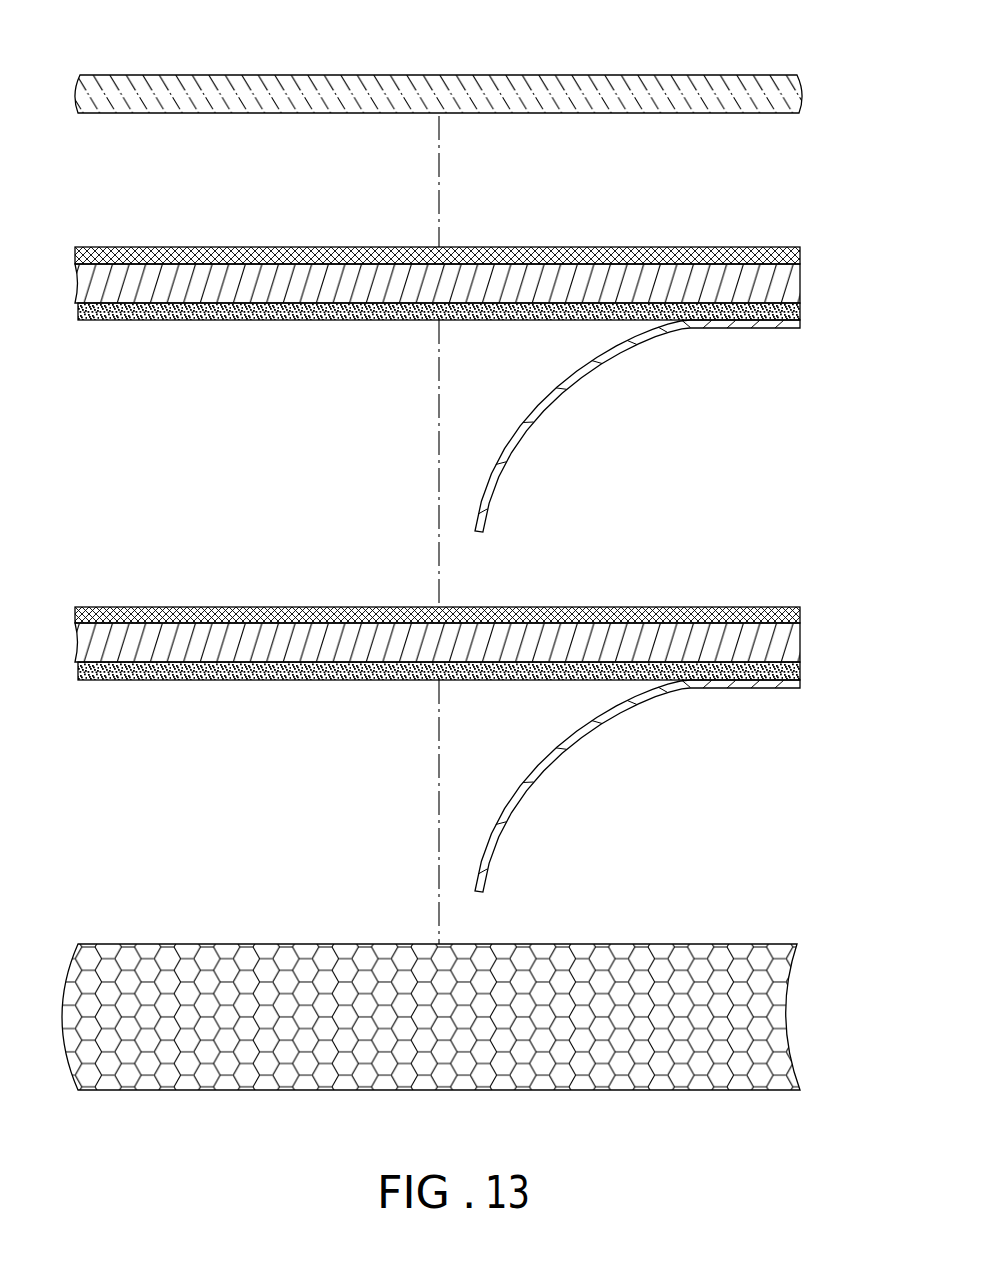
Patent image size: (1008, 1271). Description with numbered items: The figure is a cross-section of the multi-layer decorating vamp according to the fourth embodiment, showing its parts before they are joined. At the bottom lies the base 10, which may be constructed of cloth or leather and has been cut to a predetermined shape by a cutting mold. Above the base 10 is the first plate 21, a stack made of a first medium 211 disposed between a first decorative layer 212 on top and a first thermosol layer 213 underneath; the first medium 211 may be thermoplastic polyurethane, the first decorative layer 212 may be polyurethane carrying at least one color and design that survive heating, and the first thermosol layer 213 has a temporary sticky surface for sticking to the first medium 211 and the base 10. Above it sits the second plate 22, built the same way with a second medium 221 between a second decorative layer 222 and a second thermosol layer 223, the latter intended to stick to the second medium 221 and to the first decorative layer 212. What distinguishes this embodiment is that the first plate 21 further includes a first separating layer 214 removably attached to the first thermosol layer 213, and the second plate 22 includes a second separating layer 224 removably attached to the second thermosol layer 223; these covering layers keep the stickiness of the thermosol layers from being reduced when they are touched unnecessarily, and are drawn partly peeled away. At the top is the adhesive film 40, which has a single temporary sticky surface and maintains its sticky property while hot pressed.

The base 10 is at (226, 978).
The first plate 21 is at (437, 674).
The first medium 211 is at (733, 645).
The first decorative layer 212 is at (632, 606).
The first thermosol layer 213 is at (706, 683).
The first separating layer 214 is at (517, 792).
The second plate 22 is at (437, 328).
The second medium 221 is at (733, 287).
The second decorative layer 222 is at (634, 262).
The second thermosol layer 223 is at (707, 323).
The second separating layer 224 is at (517, 422).
The adhesive film 40 is at (334, 97).